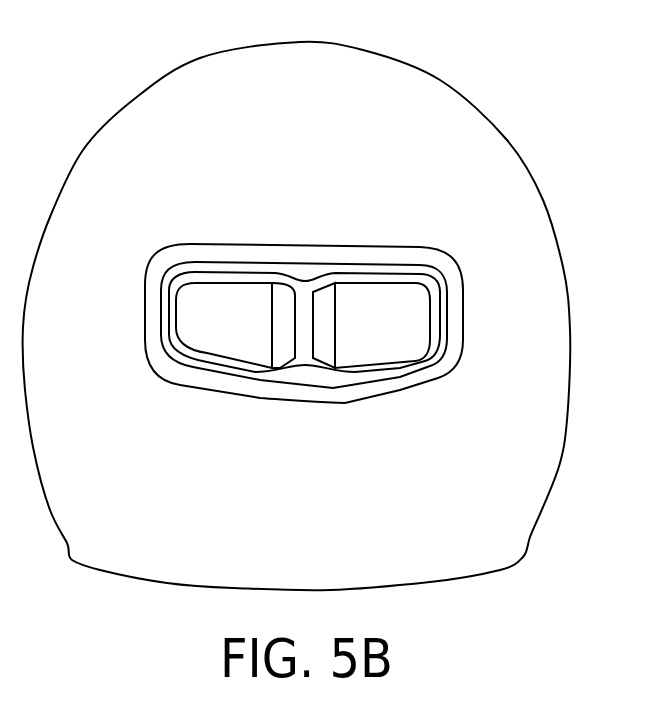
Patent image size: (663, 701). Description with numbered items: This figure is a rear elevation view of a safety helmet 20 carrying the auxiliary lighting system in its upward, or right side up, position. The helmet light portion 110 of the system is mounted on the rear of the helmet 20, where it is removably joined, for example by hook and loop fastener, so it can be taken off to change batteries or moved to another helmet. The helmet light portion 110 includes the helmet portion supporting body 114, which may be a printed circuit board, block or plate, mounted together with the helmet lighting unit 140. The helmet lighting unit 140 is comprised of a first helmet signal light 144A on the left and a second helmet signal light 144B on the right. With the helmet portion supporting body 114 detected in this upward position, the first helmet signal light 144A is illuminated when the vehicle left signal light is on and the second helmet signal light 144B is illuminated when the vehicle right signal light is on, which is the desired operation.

The helmet 20 is at (443, 82).
The helmet light portion 110 is at (400, 245).
The helmet portion supporting body 114 is at (333, 387).
The helmet lighting unit 140 is at (285, 300).
The first helmet signal light 144A is at (217, 330).
The second helmet signal light 144B is at (398, 325).